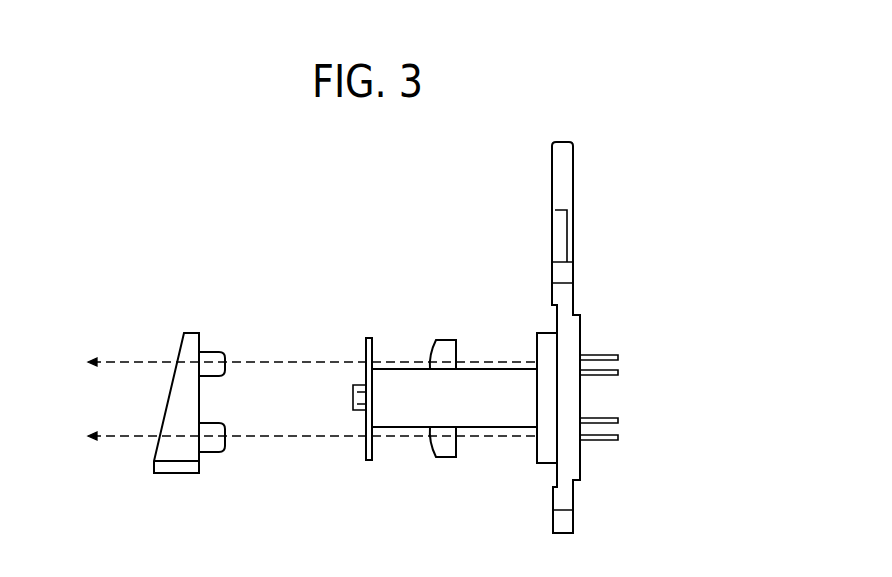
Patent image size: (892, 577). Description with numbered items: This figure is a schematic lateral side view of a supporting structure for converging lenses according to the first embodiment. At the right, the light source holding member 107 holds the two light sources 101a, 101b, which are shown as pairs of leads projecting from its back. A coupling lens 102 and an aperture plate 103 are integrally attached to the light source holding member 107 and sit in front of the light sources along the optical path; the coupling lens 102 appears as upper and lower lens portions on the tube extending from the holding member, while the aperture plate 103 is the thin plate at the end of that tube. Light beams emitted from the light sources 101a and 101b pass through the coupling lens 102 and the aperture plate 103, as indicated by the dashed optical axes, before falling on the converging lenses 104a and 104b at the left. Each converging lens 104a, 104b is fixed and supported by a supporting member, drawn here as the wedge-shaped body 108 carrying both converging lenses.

The light source 101a is at (605, 355).
The light source 101b is at (605, 441).
The coupling lens 102 is at (440, 340).
The aperture plate 103 is at (368, 338).
The converging lens 104a is at (210, 352).
The converging lens 104b is at (214, 452).
The light source holding member 107 is at (565, 142).
The wedge prism 108 is at (178, 398).